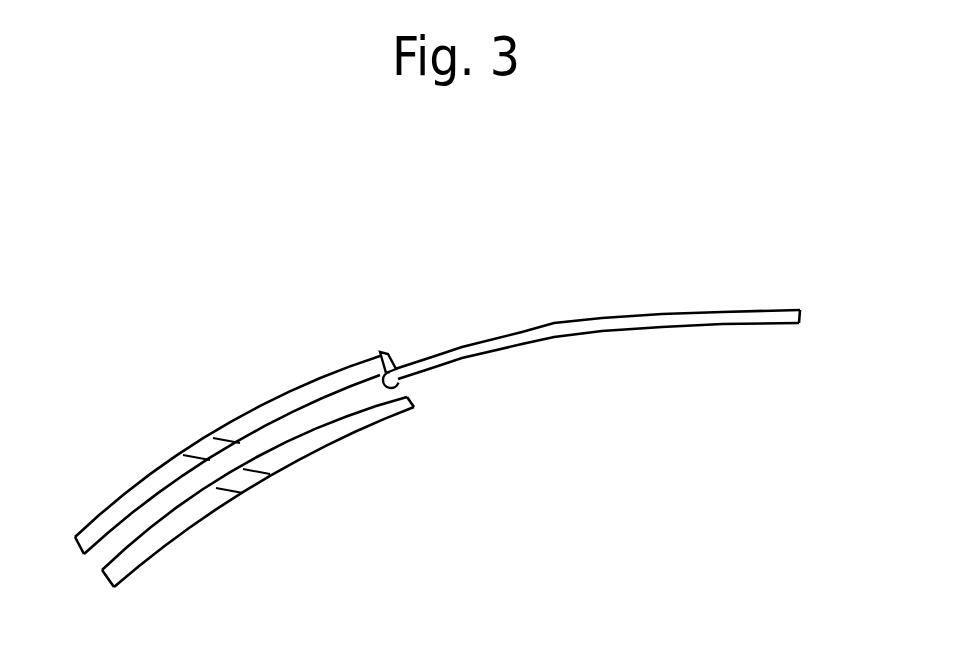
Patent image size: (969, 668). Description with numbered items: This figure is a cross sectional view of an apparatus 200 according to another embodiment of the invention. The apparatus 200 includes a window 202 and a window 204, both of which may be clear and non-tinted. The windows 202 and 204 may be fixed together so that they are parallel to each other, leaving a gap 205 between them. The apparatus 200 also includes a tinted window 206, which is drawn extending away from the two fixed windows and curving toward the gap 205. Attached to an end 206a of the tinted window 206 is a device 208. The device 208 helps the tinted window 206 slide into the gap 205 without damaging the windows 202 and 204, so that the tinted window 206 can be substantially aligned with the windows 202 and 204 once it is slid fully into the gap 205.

The apparatus 200 is at (672, 180).
The window 202 is at (258, 417).
The window 204 is at (297, 448).
The gap 205 is at (150, 517).
The tinted window 206 is at (552, 320).
The end 206a is at (377, 360).
The device 208 is at (405, 393).